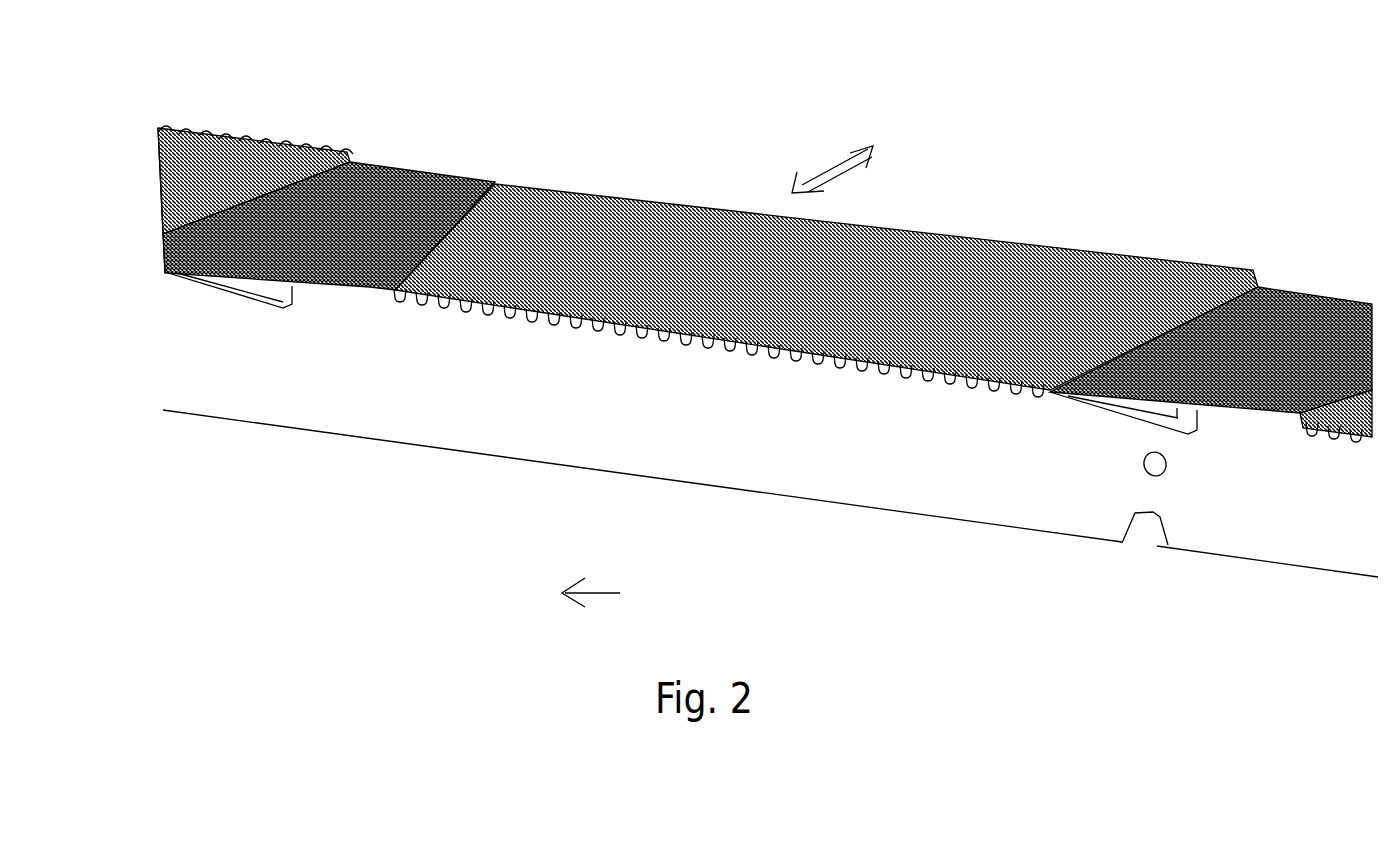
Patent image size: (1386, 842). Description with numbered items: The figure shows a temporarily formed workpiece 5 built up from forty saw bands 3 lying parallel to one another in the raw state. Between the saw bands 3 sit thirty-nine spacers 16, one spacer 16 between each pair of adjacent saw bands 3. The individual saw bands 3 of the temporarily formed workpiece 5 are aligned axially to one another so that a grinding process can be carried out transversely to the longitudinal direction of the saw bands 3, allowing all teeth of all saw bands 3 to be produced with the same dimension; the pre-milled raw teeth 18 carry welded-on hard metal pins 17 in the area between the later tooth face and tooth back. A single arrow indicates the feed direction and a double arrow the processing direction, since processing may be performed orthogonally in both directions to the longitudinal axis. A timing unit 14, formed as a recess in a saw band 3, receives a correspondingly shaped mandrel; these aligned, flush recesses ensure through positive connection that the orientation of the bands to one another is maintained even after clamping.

The saw band 3 is at (1267, 557).
The temporarily formed workpiece 5 is at (858, 487).
The timing unit 14 is at (1147, 537).
The spacer 16 is at (1262, 298).
The hard metal pin 17 is at (1187, 253).
The raw tooth 18 is at (1050, 393).